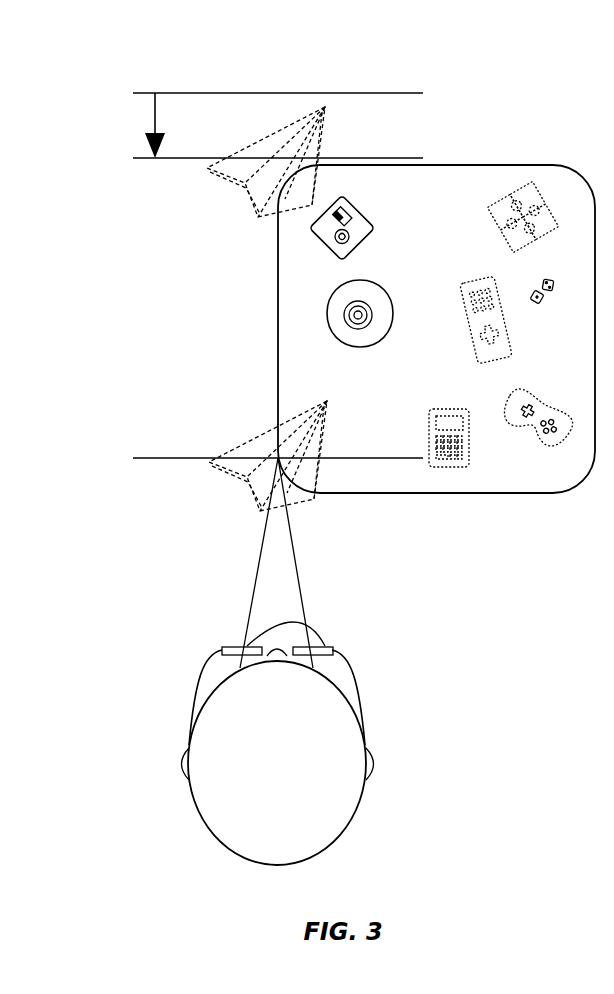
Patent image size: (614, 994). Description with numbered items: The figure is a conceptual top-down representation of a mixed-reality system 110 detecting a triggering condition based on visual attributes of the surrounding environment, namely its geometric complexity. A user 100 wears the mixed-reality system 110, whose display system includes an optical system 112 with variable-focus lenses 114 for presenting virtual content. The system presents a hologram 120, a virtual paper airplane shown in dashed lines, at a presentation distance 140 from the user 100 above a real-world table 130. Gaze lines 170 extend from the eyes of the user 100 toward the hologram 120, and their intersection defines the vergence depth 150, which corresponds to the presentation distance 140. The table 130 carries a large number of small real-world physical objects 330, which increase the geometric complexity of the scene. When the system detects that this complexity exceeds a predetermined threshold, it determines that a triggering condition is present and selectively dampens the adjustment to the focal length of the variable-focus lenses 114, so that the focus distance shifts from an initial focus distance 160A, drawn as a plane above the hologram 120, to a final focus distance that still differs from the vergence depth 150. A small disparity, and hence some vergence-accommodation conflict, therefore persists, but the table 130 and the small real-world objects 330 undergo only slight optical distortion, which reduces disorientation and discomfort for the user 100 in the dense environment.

The user 100 is at (347, 827).
The mixed-reality system 110 is at (251, 679).
The optical system 112 is at (213, 632).
The variable-focus lenses 114 is at (330, 627).
The hologram 120 is at (258, 137).
The table 130 is at (445, 165).
The presentation distance 140 is at (133, 458).
The vergence depth 150 is at (238, 340).
The initial focus distance 160A is at (368, 93).
The gaze lines 170 is at (263, 547).
The small real-world physical objects 330 is at (470, 245).